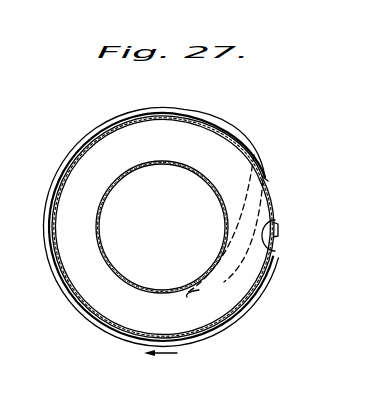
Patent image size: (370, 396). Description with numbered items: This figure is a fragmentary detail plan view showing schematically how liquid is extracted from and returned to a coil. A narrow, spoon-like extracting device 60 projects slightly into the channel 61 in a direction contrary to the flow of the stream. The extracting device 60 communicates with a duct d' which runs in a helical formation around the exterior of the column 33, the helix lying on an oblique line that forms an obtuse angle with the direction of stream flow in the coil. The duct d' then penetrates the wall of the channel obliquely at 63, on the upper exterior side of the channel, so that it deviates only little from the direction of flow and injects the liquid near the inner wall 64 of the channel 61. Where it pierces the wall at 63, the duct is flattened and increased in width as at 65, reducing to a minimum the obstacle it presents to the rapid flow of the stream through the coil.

The duct d' is at (160, 218).
The column 33 is at (272, 199).
The extracting device 60 is at (274, 251).
The channel 61 is at (244, 276).
The wall penetration point 63 is at (270, 174).
The inner wall 64 is at (197, 289).
The flattened duct portion 65 is at (258, 160).